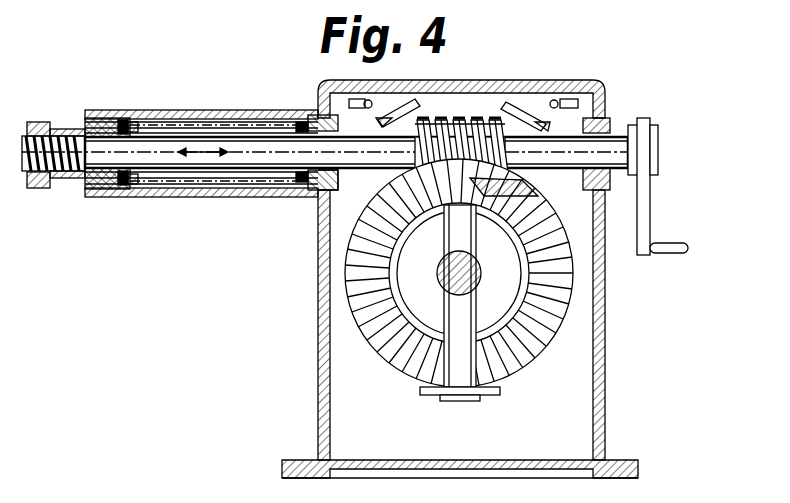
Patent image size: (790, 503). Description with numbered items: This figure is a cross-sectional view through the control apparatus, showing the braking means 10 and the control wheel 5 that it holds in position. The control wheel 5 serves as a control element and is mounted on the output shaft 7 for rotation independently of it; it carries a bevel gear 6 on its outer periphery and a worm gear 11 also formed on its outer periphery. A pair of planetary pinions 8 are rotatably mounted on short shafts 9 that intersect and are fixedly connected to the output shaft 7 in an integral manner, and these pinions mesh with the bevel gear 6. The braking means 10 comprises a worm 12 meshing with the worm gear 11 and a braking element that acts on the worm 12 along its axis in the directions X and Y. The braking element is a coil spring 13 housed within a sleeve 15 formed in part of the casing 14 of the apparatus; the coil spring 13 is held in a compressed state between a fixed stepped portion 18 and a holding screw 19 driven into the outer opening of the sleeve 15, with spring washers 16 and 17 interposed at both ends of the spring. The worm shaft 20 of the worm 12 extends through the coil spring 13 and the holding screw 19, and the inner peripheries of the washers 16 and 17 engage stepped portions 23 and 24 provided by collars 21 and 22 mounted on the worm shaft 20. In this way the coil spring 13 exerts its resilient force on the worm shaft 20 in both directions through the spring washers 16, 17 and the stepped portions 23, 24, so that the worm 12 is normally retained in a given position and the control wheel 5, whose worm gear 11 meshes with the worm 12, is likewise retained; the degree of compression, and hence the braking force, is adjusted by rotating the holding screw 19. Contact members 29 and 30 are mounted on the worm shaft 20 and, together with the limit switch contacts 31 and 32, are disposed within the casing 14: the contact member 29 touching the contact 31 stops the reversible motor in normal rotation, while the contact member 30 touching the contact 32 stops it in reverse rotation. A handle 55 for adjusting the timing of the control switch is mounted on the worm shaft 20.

The control wheel 5 is at (460, 277).
The bevel gear 6 is at (553, 305).
The output shaft 7 is at (440, 274).
The planetary pinions 8 is at (432, 208).
The short shafts 9 is at (480, 300).
The braking means 10 is at (168, 123).
The worm gear 11 is at (505, 194).
The worm 12 is at (458, 118).
The coil spring 13 is at (192, 190).
The casing 14 is at (566, 88).
The sleeve 15 is at (216, 111).
The spring washer 16 is at (304, 184).
The spring washer 17 is at (140, 192).
The fixed stepped portion 18 is at (300, 121).
The holding screw 19 is at (95, 197).
The worm shaft 20 is at (264, 170).
The collar 21 is at (405, 150).
The collar 22 is at (38, 189).
The stepped portion 23 is at (322, 115).
The stepped portion 24 is at (118, 190).
The contact member 29 is at (420, 101).
The contact member 30 is at (528, 103).
The contact of limit switch 31 is at (366, 100).
The contact of limit switch 32 is at (578, 101).
The handle 55 is at (650, 210).